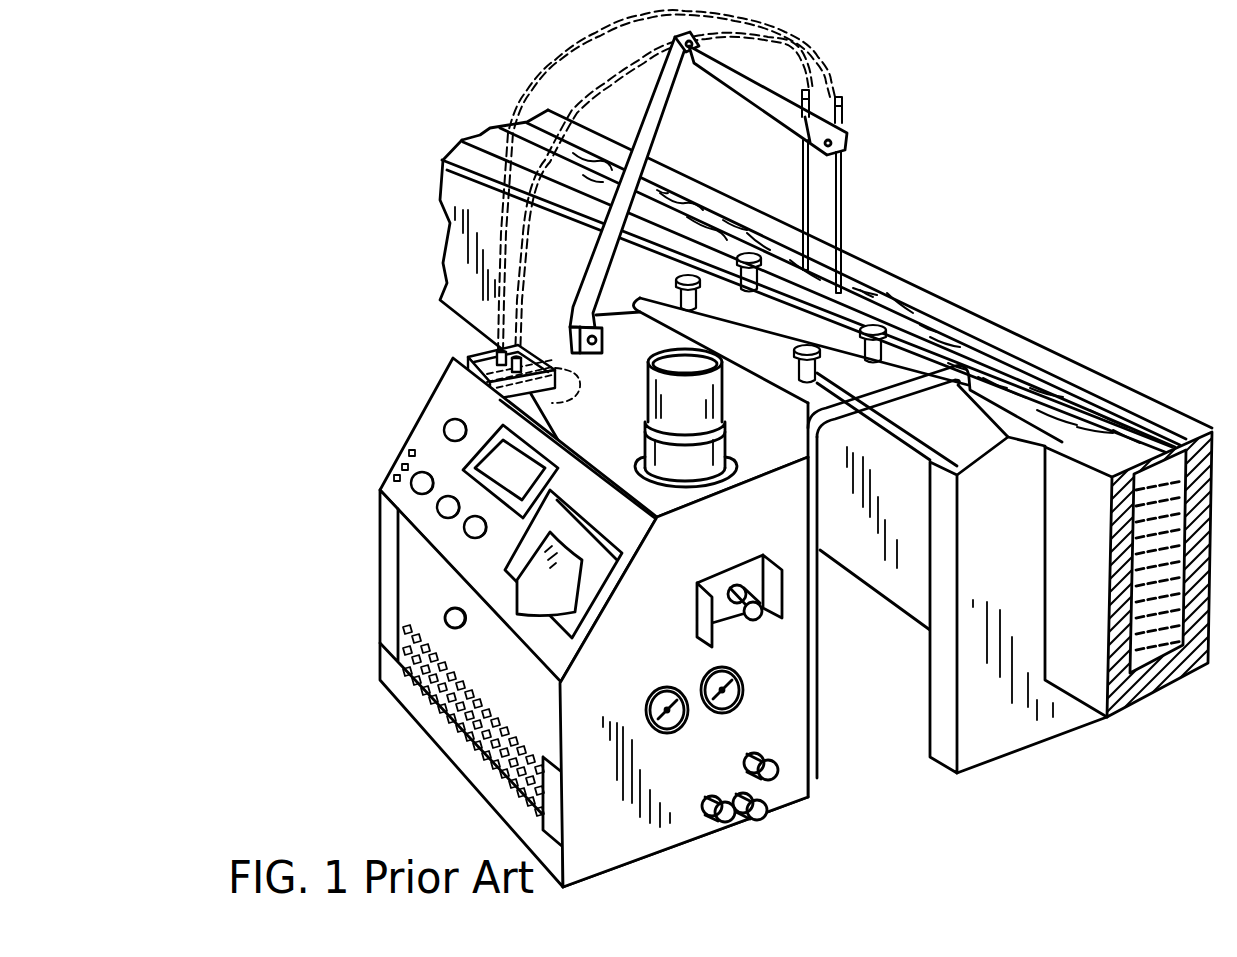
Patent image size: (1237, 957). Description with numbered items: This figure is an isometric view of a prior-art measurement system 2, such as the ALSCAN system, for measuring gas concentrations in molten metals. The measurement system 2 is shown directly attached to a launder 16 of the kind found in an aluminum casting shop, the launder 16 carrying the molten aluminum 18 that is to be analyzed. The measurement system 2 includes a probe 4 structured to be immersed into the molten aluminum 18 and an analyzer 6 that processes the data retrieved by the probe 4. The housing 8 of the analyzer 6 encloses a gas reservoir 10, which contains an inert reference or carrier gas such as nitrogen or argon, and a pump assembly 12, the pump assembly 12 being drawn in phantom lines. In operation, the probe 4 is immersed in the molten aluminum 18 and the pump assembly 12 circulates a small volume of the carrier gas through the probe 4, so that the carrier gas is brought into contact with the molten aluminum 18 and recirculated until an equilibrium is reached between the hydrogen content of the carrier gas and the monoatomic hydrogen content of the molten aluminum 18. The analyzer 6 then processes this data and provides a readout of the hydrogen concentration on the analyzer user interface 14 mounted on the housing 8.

The measurement system 2 is at (375, 180).
The probe 4 is at (848, 213).
The analyzer 6 is at (786, 770).
The housing 8 is at (664, 641).
The gas reservoir 10 is at (455, 670).
The pump assembly 12 is at (470, 354).
The analyzer user interface 14 is at (446, 528).
The launder 16 is at (1122, 396).
The molten aluminum 18 is at (1008, 375).